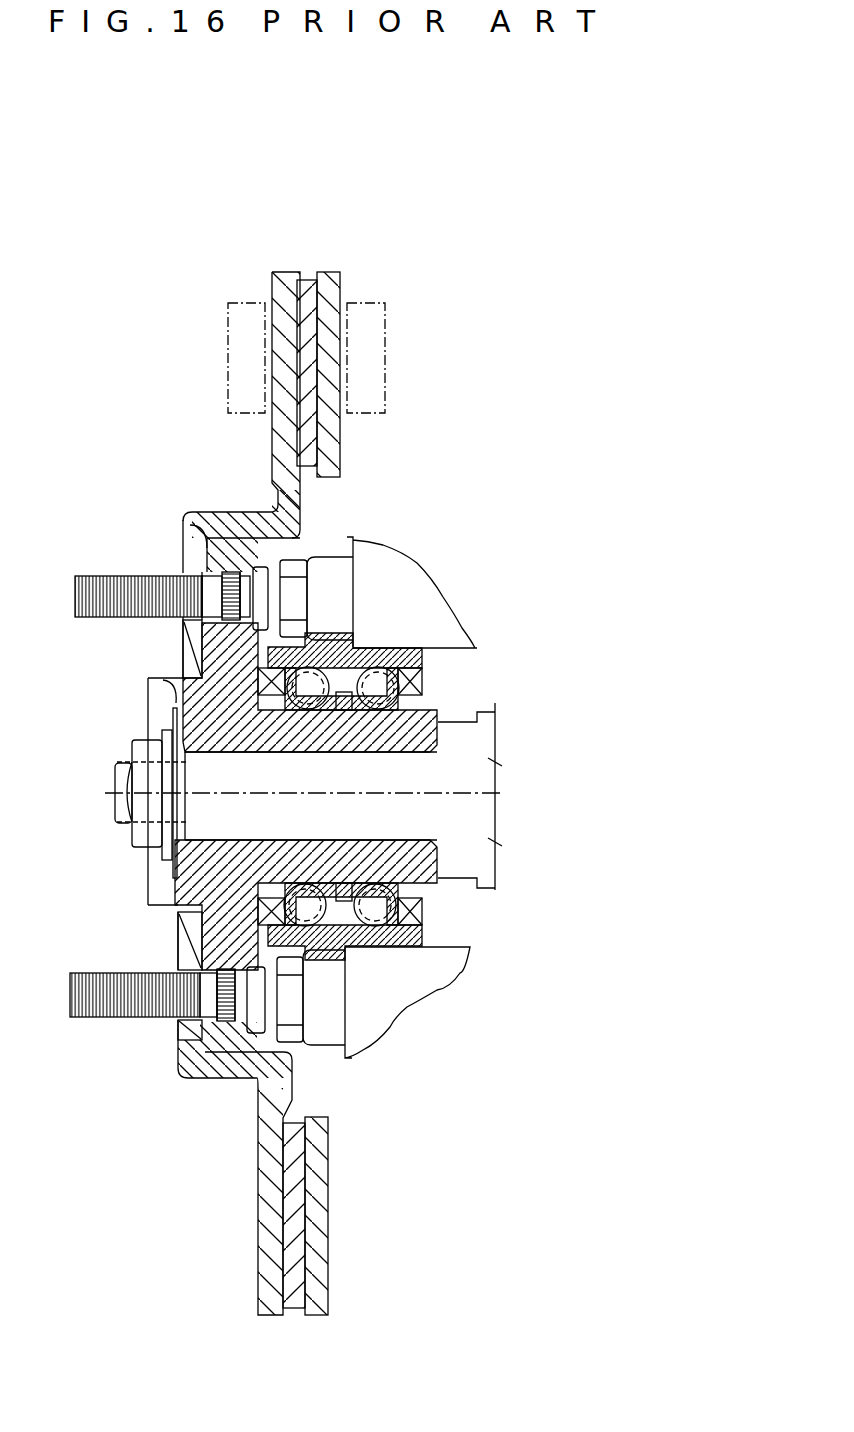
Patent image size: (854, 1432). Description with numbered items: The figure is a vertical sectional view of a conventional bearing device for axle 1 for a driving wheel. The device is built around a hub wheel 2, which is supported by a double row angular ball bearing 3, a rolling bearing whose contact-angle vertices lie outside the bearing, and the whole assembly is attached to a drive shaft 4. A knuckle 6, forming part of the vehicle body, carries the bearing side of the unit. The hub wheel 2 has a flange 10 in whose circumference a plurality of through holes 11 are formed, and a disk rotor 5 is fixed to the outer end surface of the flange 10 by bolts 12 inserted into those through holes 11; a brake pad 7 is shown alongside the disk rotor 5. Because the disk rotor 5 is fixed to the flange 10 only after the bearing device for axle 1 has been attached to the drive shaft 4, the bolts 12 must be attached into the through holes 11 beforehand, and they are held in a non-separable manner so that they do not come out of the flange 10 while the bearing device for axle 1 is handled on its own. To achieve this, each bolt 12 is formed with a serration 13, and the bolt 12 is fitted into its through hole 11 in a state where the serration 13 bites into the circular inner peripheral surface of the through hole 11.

The bearing device for axle 1 is at (146, 670).
The hub wheel 2 is at (190, 703).
The double row angular ball bearing 3 is at (388, 642).
The drive shaft 4 is at (482, 742).
The disk rotor 5 is at (217, 518).
The knuckle 6 is at (407, 570).
The brake pad 7 is at (373, 303).
The flange 10 is at (205, 515).
The through hole 11 is at (195, 582).
The bolt 12 is at (98, 588).
The serration 13 is at (222, 585).